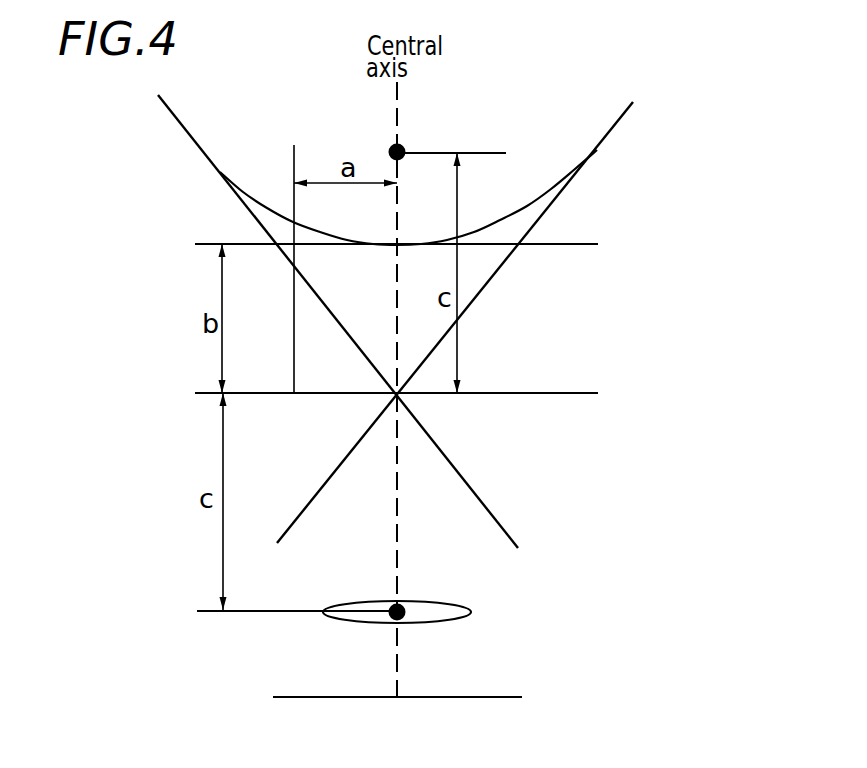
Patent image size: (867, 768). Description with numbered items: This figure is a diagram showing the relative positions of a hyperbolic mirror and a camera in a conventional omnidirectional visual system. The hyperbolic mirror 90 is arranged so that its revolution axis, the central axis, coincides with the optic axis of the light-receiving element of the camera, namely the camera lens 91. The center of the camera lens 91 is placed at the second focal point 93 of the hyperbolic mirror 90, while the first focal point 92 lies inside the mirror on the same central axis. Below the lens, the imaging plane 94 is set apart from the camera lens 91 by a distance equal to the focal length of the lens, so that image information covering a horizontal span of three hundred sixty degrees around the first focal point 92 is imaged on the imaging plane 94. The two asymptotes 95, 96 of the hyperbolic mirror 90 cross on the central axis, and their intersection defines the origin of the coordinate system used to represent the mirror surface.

The hyperbolic mirror 90 is at (240, 184).
The camera lens 91 is at (460, 583).
The first focal point 92 is at (405, 147).
The second focal point 93 is at (402, 620).
The imaging plane 94 is at (417, 699).
The asymptote 95 is at (598, 150).
The asymptote 96 is at (467, 480).